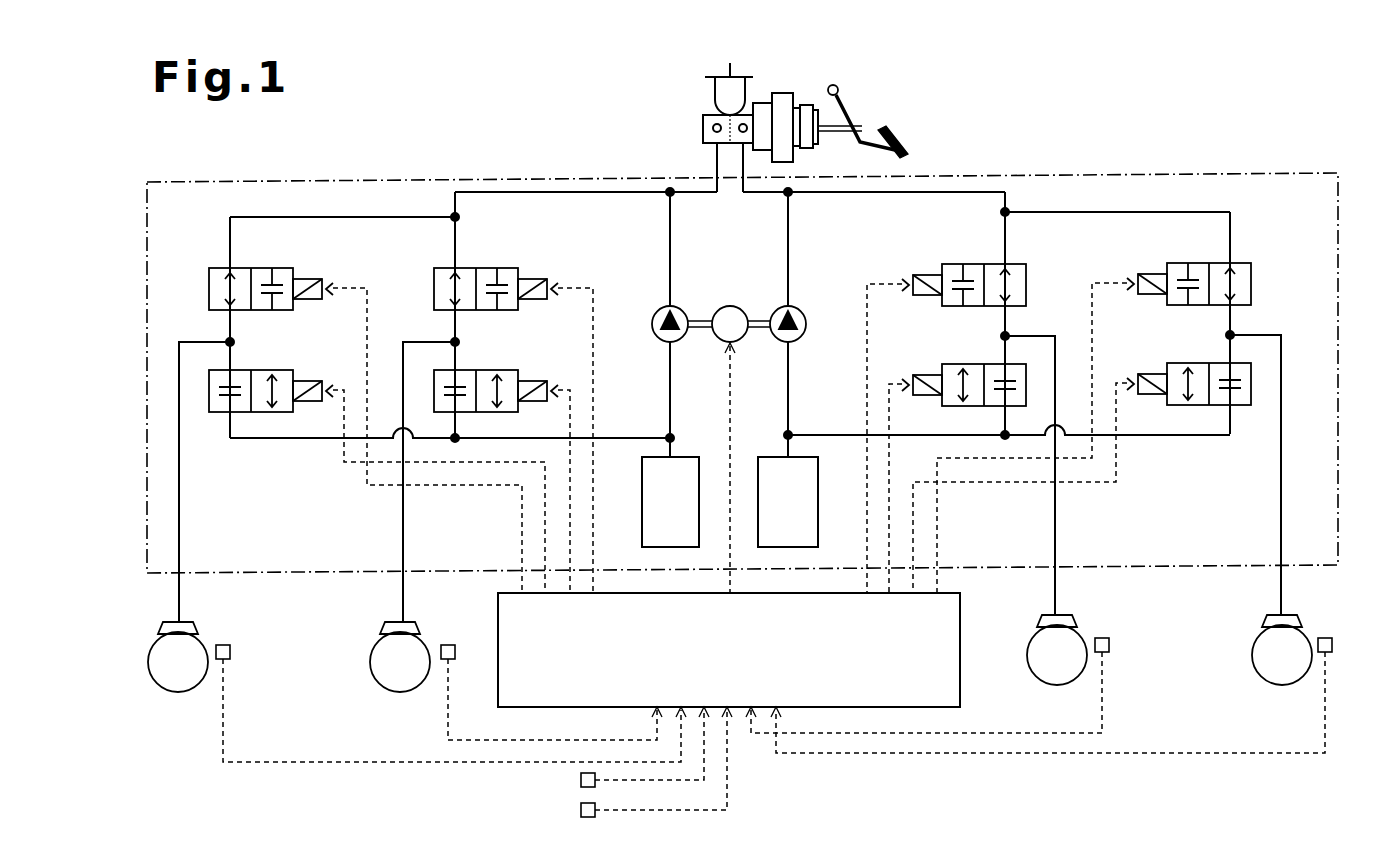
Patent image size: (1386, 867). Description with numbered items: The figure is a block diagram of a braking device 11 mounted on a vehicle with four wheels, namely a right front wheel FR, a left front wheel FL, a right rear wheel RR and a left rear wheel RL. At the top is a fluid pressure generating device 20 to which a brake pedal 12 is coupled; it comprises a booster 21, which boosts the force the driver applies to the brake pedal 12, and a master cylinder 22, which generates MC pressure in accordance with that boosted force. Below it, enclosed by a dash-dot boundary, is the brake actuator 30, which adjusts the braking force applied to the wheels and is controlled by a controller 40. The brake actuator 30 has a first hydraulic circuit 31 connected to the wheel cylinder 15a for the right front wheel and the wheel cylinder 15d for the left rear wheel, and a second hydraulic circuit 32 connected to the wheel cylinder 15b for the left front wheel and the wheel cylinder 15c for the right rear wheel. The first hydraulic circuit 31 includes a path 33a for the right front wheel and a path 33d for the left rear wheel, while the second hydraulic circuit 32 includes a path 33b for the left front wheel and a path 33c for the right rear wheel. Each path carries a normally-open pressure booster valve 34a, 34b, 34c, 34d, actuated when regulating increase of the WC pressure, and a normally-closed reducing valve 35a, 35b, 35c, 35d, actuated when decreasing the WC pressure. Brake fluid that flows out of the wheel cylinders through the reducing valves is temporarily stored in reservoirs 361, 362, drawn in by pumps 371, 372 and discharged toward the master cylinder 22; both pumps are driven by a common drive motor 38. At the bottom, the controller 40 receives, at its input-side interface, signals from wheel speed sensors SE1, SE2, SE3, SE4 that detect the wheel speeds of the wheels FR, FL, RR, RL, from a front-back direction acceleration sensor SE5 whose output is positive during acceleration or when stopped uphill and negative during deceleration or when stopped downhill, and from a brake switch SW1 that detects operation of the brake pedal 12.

The braking device 11 is at (1133, 96).
The brake pedal 12 is at (902, 137).
The wheel cylinder 15a is at (393, 622).
The wheel cylinder 15b is at (1068, 618).
The wheel cylinder 15c is at (1270, 618).
The wheel cylinder 15d is at (188, 622).
The fluid pressure generating device 20 is at (881, 85).
The booster 21 is at (784, 100).
The master cylinder 22 is at (704, 112).
The brake actuator 30 is at (1205, 174).
The first hydraulic circuit 31 is at (692, 197).
The second hydraulic circuit 32 is at (765, 197).
The path 33a is at (457, 232).
The path 33b is at (1007, 233).
The path 33c is at (1115, 212).
The path 33d is at (348, 217).
The pressure booster valve 34a is at (510, 268).
The pressure booster valve 34b is at (975, 263).
The pressure booster valve 34c is at (1200, 262).
The pressure booster valve 34d is at (265, 267).
The reducing valve 35a is at (510, 370).
The reducing valve 35b is at (972, 363).
The reducing valve 35c is at (1200, 362).
The reducing valve 35d is at (286, 370).
The reservoir 361 is at (690, 455).
The reservoir 362 is at (772, 455).
The pump 371 is at (698, 296).
The pump 372 is at (779, 306).
The drive motor 38 is at (716, 347).
The controller 40 is at (962, 680).
The wheel speed sensor SE1 is at (450, 642).
The wheel speed sensor SE2 is at (1112, 646).
The wheel speed sensor SE3 is at (1325, 636).
The wheel speed sensor SE4 is at (232, 652).
The front-back direction acceleration sensor SE5 is at (580, 782).
The brake switch SW1 is at (580, 812).